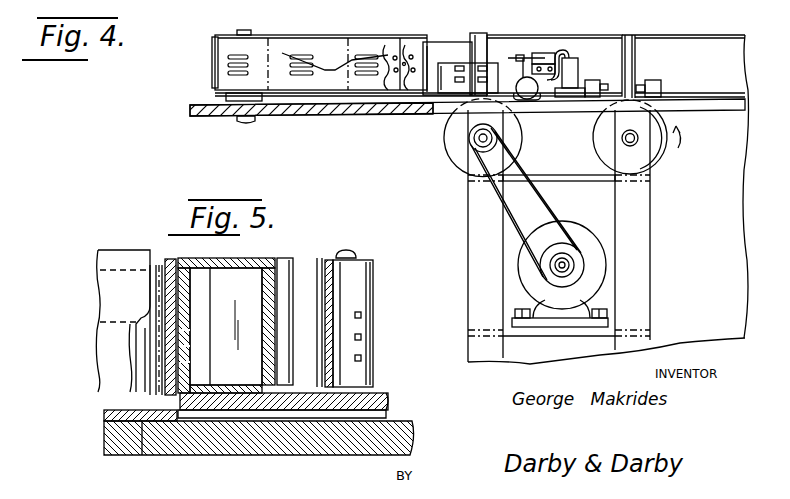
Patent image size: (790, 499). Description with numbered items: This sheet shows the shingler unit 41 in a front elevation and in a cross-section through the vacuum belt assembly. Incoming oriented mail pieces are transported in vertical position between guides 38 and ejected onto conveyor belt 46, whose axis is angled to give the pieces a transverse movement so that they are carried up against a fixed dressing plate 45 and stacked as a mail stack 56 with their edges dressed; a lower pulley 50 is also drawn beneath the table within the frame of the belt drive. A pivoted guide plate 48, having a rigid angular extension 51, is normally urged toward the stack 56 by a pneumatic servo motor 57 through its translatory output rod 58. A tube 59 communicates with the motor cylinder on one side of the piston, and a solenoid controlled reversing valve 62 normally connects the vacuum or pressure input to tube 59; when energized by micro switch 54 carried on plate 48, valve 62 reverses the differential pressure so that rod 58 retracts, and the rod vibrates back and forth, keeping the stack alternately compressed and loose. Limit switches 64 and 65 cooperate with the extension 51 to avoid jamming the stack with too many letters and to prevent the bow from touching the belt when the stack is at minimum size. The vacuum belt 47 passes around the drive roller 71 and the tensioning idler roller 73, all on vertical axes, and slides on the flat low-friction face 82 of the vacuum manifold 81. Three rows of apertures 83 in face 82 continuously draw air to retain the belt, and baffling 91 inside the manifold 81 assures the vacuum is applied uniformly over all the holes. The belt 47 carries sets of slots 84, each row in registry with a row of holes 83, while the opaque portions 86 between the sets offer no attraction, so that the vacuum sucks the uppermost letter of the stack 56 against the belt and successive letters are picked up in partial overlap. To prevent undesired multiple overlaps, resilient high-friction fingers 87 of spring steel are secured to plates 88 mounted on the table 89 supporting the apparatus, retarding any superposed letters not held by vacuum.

In FIG. 4, the guides 38 is at (690, 45).
In FIG. 4, the shingler unit 41 is at (320, 37).
In FIG. 4, the dressing plate 45 is at (472, 78).
In FIG. 5, the dressing plate 45 is at (116, 258).
In FIG. 4, the conveyor belt 46 is at (565, 179).
In FIG. 5, the conveyor belt 46 is at (104, 414).
In FIG. 5, the vacuum belt 47 is at (170, 262).
In FIG. 4, the guide plate 48 is at (582, 38).
In FIG. 4, the motor pulley 50 is at (590, 240).
In FIG. 4, the angular extension 51 is at (622, 36).
In FIG. 4, the micro switch 54 is at (547, 53).
In FIG. 4, the mail stack 56 is at (585, 37).
In FIG. 4, the pneumatic servo motor 57 is at (527, 99).
In FIG. 4, the output rod 58 is at (522, 55).
In FIG. 4, the tube 59 is at (562, 48).
In FIG. 4, the solenoid controlled reversing valve 62 is at (578, 70).
In FIG. 4, the limit switch 64 is at (655, 82).
In FIG. 4, the micro-switch 65 is at (592, 82).
In FIG. 4, the drive roller 71 is at (262, 36).
In FIG. 5, the drive roller 71 is at (284, 258).
In FIG. 5, the tensioning idler roller 73 is at (350, 256).
In FIG. 4, the vacuum manifold 81 is at (368, 36).
In FIG. 5, the vacuum manifold 81 is at (211, 258).
In FIG. 5, the flat face 82 is at (190, 290).
In FIG. 4, the apertures 83 is at (412, 60).
In FIG. 4, the slots 84 is at (252, 73).
In FIG. 4, the opaque portions 86 is at (333, 48).
In FIG. 4, the resilient high-friction fingers 87 is at (430, 97).
In FIG. 5, the resilient high-friction fingers 87 is at (141, 422).
In FIG. 4, the plates 88 is at (452, 84).
In FIG. 4, the table 89 is at (190, 109).
In FIG. 5, the baffling 91 is at (228, 365).